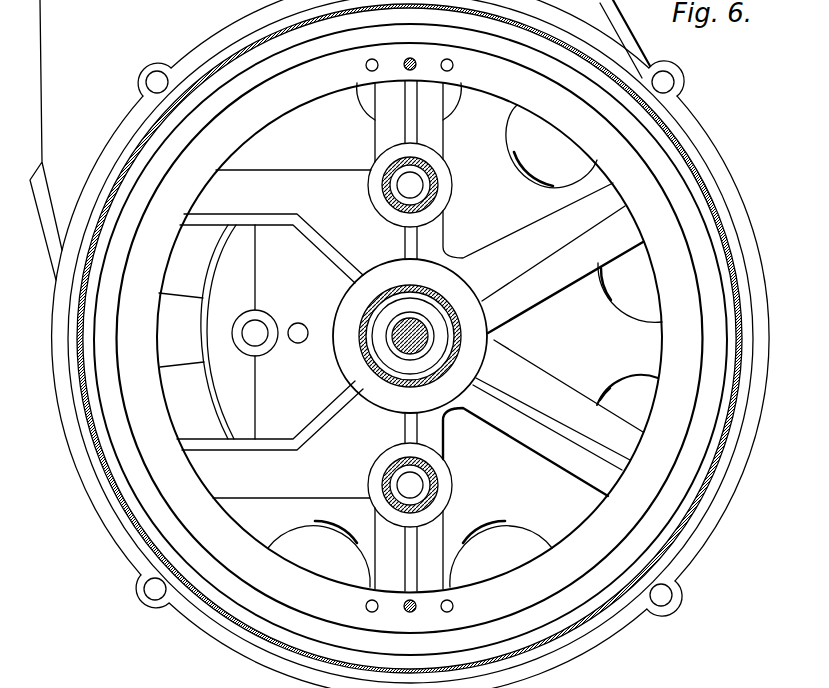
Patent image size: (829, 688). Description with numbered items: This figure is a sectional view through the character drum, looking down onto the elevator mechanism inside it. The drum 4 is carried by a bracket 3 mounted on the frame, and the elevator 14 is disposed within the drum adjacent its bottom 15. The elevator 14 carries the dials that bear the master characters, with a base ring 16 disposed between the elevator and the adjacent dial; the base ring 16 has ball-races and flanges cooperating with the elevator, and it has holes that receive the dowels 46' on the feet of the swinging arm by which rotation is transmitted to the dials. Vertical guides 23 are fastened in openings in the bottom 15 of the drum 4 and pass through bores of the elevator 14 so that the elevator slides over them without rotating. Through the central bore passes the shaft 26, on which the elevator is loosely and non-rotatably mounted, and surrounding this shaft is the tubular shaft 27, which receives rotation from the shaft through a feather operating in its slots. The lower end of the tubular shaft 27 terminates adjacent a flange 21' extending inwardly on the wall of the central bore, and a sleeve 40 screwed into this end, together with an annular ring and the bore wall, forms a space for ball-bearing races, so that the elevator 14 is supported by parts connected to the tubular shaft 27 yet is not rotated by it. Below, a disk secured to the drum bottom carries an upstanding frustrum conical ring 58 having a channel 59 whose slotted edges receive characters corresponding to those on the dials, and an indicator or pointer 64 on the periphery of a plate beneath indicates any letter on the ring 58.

The bracket 3 is at (42, 38).
The drum 4 is at (743, 373).
The elevator 14 is at (409, 337).
The bottom 15 is at (742, 243).
The base ring 16 is at (665, 276).
The flange 21' is at (424, 336).
The vertical guide 23 is at (440, 183).
The shaft 26 is at (403, 348).
The tubular shaft 27 is at (443, 308).
The sleeve 40 is at (437, 350).
The dowel 46' is at (409, 337).
The frustrum conical ring 58 is at (216, 268).
The channel 59 is at (181, 408).
The indicator or pointer 64 is at (170, 345).